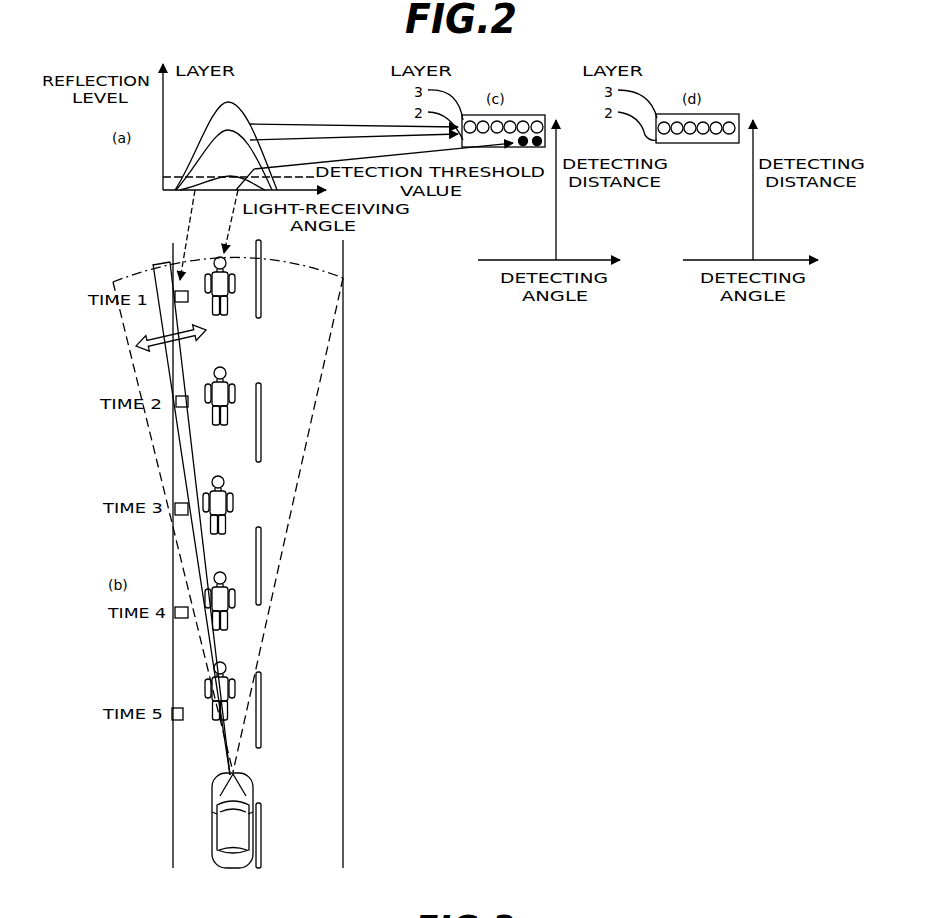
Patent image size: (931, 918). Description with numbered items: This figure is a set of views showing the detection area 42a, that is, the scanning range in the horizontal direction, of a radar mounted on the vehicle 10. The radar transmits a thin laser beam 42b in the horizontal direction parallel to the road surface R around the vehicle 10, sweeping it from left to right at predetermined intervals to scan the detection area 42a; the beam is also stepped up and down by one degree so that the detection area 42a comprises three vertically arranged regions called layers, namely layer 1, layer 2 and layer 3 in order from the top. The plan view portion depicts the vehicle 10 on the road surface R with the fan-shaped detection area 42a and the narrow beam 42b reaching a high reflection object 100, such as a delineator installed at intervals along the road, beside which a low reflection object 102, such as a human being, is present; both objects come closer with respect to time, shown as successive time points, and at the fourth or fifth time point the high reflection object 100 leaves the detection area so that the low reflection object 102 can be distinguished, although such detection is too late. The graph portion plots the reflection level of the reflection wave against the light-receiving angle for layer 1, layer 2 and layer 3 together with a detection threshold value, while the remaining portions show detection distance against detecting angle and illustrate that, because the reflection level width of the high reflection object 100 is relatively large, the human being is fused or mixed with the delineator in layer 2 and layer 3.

The high reflection object 100 is at (176, 294).
The low reflection object 102 is at (233, 277).
The detection area 42a is at (344, 374).
The laser beam 42b is at (167, 378).
The road surface R is at (343, 640).
The vehicle 10 is at (225, 868).
The layer 1 is at (222, 174).
The layer 2 is at (226, 136).
The layer 3 is at (224, 160).